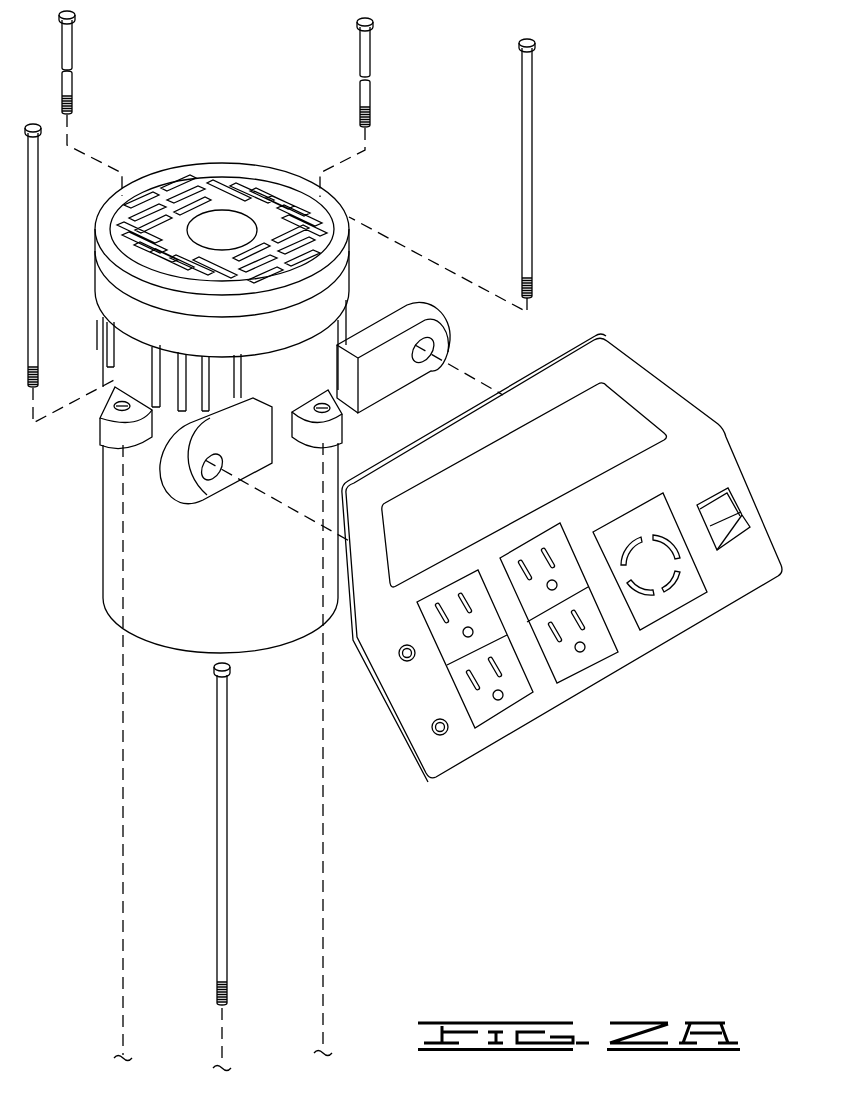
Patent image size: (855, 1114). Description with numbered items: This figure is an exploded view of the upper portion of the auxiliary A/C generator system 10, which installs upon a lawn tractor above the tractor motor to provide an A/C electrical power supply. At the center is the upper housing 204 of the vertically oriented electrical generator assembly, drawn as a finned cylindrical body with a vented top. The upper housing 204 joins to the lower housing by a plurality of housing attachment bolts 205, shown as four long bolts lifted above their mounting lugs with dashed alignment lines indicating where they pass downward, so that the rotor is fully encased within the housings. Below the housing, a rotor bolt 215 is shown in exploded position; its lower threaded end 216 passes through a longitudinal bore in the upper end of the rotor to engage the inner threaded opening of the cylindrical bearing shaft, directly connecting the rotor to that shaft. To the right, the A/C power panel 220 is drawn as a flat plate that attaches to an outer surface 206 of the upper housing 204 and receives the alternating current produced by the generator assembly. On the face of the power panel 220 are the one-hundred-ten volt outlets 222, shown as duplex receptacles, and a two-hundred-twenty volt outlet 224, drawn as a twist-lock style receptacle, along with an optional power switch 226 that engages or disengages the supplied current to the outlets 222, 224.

The auxiliary A/C generator system 10 is at (686, 155).
The upper housing 204 is at (357, 220).
The housing attachment bolts 205 is at (75, 50).
The outer surface 206 is at (167, 428).
The rotor bolt 215 is at (259, 867).
The lower threaded end 216 is at (228, 990).
The A/C power panel 220 is at (657, 380).
The 110 volt outlets 222 is at (605, 643).
The 220 volt outlet 224 is at (678, 600).
The power switch 226 is at (720, 503).